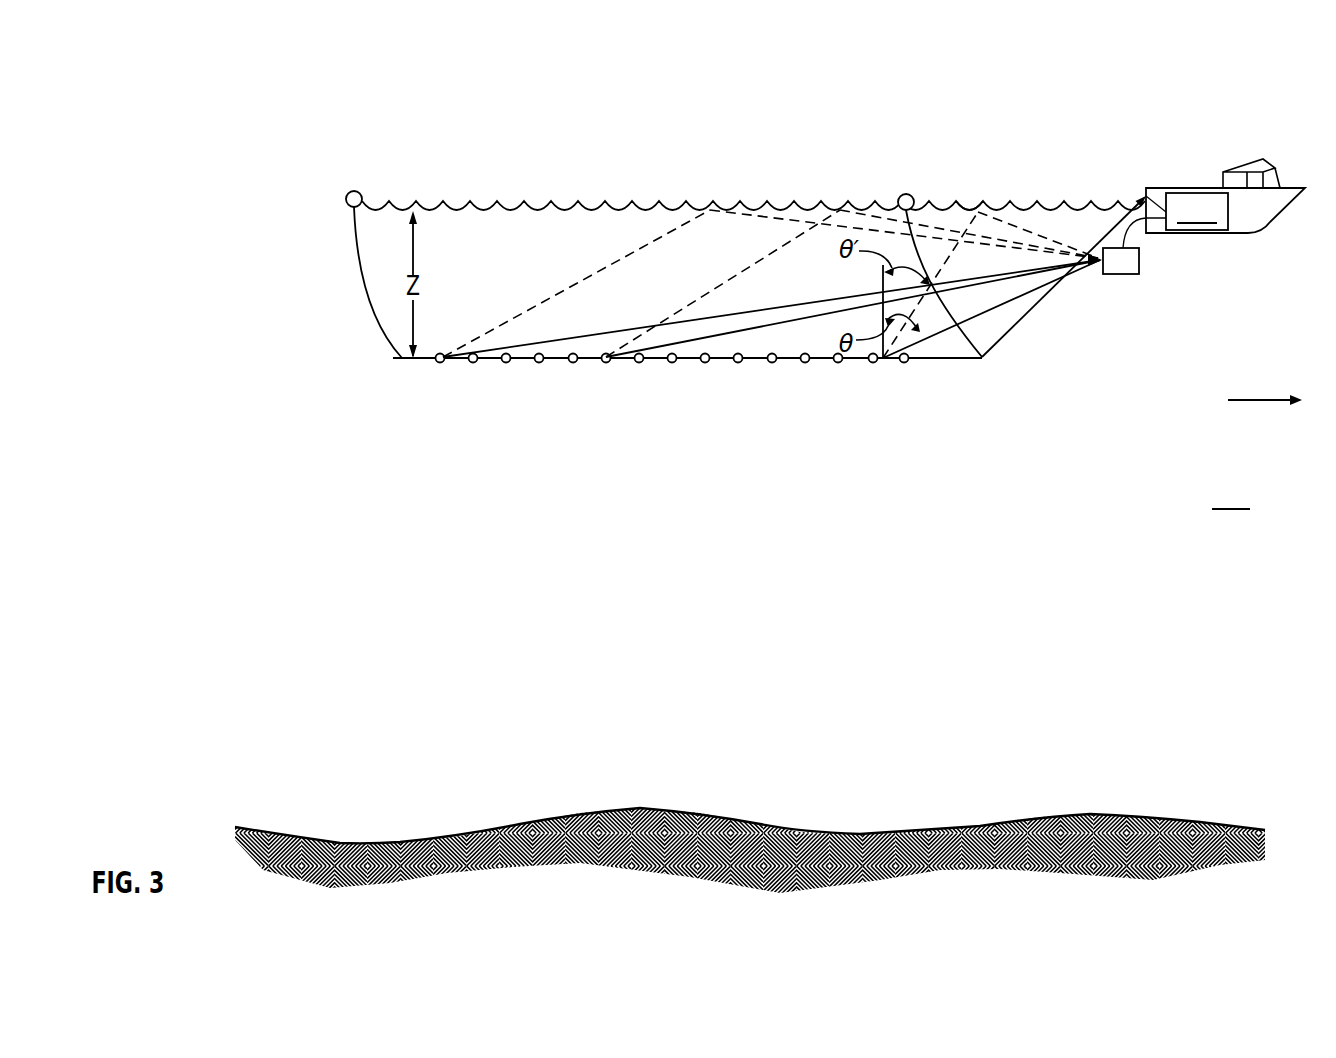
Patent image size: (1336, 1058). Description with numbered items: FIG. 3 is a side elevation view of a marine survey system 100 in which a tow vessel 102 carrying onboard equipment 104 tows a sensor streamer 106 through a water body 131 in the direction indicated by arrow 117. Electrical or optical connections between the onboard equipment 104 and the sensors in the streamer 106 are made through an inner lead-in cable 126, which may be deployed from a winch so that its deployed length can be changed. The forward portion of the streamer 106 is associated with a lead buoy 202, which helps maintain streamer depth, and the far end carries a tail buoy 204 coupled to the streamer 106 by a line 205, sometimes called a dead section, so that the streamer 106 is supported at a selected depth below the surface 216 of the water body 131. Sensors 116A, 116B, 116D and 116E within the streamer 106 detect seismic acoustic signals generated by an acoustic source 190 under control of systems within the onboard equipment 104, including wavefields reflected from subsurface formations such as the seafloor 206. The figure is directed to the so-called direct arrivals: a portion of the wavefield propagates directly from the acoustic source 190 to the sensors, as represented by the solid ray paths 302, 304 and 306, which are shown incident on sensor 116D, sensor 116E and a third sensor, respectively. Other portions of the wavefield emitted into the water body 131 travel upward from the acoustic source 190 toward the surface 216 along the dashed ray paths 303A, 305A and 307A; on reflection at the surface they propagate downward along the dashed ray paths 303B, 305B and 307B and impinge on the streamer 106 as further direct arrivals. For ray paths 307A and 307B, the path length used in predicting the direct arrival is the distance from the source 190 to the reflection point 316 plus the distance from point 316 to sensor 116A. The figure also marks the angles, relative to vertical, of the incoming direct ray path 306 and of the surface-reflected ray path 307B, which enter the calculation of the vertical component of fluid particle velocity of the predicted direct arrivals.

The marine survey system 100 is at (171, 85).
The tow vessel 102 is at (1217, 178).
The onboard equipment 104 is at (1163, 187).
The sensor streamer 106 is at (517, 362).
The sensor 116A is at (883, 360).
The sensor 116B is at (808, 363).
The sensor 116D is at (440, 363).
The sensor 116E is at (603, 363).
The arrow 117 is at (1247, 398).
The inner lead-in cable 126 is at (1033, 303).
The water body 131 is at (1231, 495).
The acoustic source 190 is at (1140, 267).
The lead buoy 202 is at (905, 194).
The tail buoy 204 is at (346, 202).
The line 205 is at (360, 278).
The seafloor 206 is at (552, 822).
The water surface 216 is at (636, 207).
The ray path 302 is at (627, 330).
The ray path 303A is at (747, 217).
The ray path 303B is at (597, 274).
The ray path 304 is at (820, 313).
The ray path 305A is at (880, 216).
The ray path 305B is at (740, 277).
The ray path 306 is at (932, 342).
The ray path 307A is at (1011, 225).
The ray path 307B is at (984, 352).
The point 316 is at (962, 207).